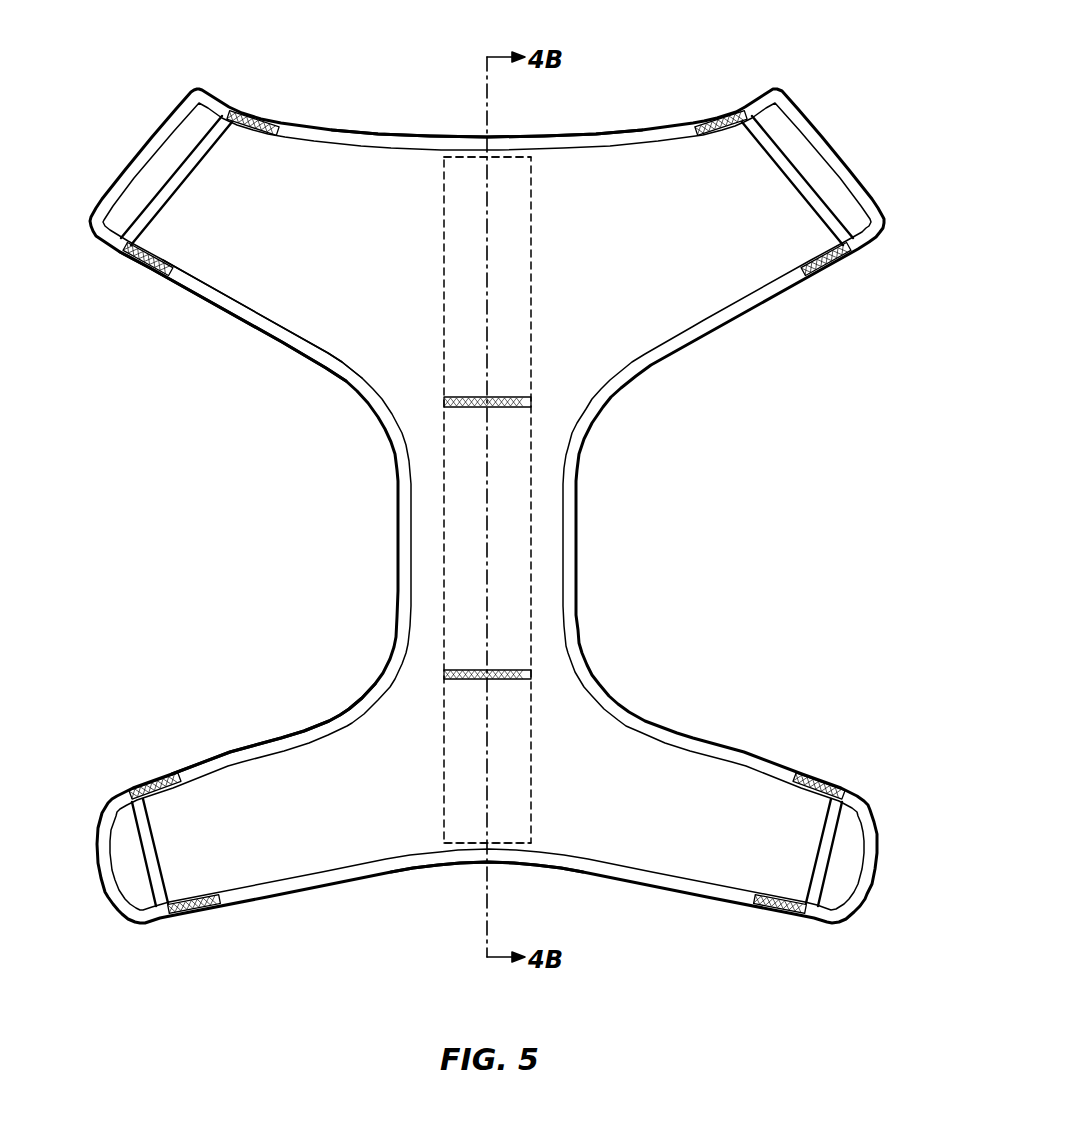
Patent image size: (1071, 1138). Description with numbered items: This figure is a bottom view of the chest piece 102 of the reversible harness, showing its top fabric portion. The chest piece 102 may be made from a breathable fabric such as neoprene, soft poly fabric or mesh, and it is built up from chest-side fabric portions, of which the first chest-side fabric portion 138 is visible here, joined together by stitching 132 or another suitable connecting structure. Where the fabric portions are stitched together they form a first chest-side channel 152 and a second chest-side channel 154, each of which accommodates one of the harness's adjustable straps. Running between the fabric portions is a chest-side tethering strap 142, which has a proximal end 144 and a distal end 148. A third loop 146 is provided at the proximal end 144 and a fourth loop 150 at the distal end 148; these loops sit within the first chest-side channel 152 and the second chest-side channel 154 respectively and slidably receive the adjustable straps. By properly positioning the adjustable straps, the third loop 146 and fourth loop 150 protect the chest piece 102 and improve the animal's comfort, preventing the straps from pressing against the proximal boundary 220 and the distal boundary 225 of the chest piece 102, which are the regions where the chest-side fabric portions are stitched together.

The chest piece 102 is at (664, 30).
The stitching 132 is at (257, 112).
The first chest-side fabric portion 138 is at (297, 305).
The chest-side tethering strap 142 is at (436, 526).
The proximal end 144 is at (497, 157).
The third loop 146 is at (443, 313).
The distal end 148 is at (497, 843).
The fourth loop 150 is at (443, 765).
The first chest-side channel 152 is at (170, 177).
The second chest-side channel 154 is at (140, 853).
The proximal boundary 220 is at (404, 127).
The distal boundary 225 is at (410, 880).